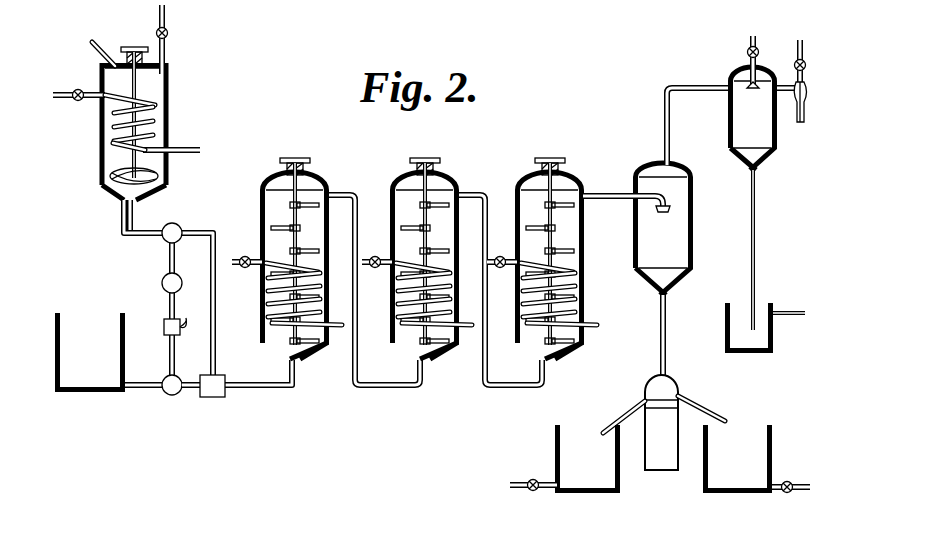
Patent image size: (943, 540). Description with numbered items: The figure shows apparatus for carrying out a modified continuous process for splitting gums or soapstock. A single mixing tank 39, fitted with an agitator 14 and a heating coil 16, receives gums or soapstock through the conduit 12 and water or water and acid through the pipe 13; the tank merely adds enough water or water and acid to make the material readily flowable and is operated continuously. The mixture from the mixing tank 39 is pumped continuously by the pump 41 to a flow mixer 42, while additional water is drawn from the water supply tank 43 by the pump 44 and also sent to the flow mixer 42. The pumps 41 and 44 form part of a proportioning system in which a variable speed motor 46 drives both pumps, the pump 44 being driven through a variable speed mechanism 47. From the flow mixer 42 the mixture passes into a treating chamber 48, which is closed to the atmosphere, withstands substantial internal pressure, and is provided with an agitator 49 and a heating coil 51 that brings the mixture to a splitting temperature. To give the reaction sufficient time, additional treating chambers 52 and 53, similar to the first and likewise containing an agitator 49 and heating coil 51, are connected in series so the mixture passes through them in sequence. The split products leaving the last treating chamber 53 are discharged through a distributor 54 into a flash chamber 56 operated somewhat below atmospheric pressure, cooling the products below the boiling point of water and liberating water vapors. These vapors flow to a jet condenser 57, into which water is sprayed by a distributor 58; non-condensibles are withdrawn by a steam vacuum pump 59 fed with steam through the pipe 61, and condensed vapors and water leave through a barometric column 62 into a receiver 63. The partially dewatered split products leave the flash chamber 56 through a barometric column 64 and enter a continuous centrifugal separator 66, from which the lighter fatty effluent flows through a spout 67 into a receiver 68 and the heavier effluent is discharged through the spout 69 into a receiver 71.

The conduit 12 is at (118, 45).
The pipe 13 is at (167, 20).
The agitator 14 is at (140, 91).
The heating coil 16 is at (160, 121).
The mixing tank 39 is at (100, 163).
The pump 41 is at (179, 226).
The flow mixer 42 is at (217, 398).
The water supply tank 43 is at (73, 392).
The pump 44 is at (167, 394).
The variable speed motor 46 is at (162, 285).
The variable speed mechanism 47 is at (164, 329).
The treating chamber 48 is at (316, 181).
The agitator 49 is at (300, 220).
The heating coil 51 is at (320, 283).
The treating chamber 52 is at (446, 181).
The treating chamber 53 is at (572, 186).
The distributor 54 is at (672, 210).
The flash chamber 56 is at (693, 243).
The jet condenser 57 is at (733, 76).
The distributor 58 is at (759, 78).
The steam vacuum pump 59 is at (807, 100).
The pipe 61 is at (803, 42).
The barometric column 62 is at (756, 238).
The receiver 63 is at (774, 343).
The barometric column 64 is at (667, 327).
The continuous centrifugal separator 66 is at (654, 390).
The spout 67 is at (700, 409).
The receiver 68 is at (771, 440).
The spout 69 is at (630, 418).
The receiver 71 is at (557, 447).